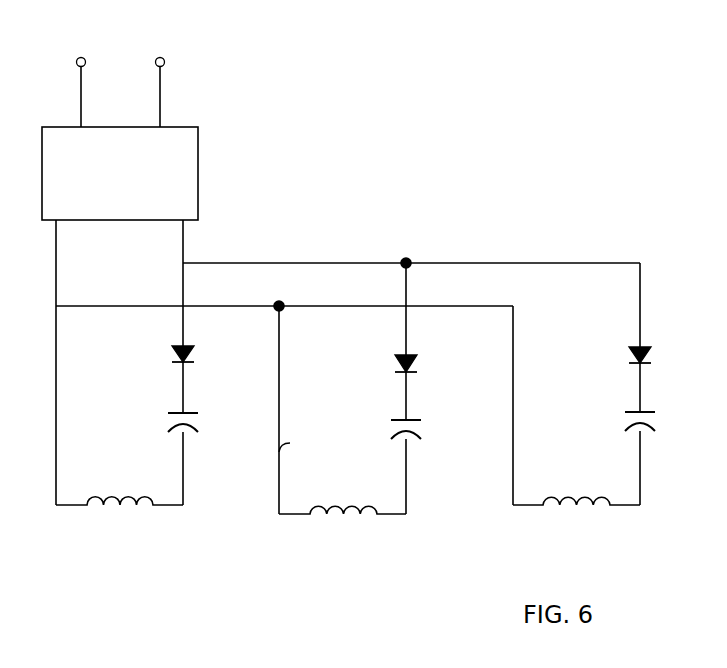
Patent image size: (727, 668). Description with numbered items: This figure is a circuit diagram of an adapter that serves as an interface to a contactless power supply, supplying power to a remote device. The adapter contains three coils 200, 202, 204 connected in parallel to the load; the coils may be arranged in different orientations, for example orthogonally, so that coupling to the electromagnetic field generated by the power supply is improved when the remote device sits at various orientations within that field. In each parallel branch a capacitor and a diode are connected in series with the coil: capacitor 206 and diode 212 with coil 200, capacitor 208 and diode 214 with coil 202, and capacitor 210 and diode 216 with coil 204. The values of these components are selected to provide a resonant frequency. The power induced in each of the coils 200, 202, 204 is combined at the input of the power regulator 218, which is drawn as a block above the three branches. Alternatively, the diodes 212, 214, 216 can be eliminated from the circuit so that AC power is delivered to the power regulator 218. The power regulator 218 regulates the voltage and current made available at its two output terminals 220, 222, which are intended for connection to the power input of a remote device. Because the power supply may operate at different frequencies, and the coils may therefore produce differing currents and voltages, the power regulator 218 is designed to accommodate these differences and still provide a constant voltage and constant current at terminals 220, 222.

The coil 200 is at (120, 517).
The coil 202 is at (310, 500).
The coil 204 is at (578, 519).
The capacitor 206 is at (182, 407).
The capacitor 208 is at (405, 417).
The capacitor 210 is at (610, 405).
The diode 212 is at (167, 346).
The diode 214 is at (396, 352).
The diode 216 is at (630, 348).
The power regulator 218 is at (198, 170).
The terminal 220 is at (79, 58).
The terminal 222 is at (162, 58).